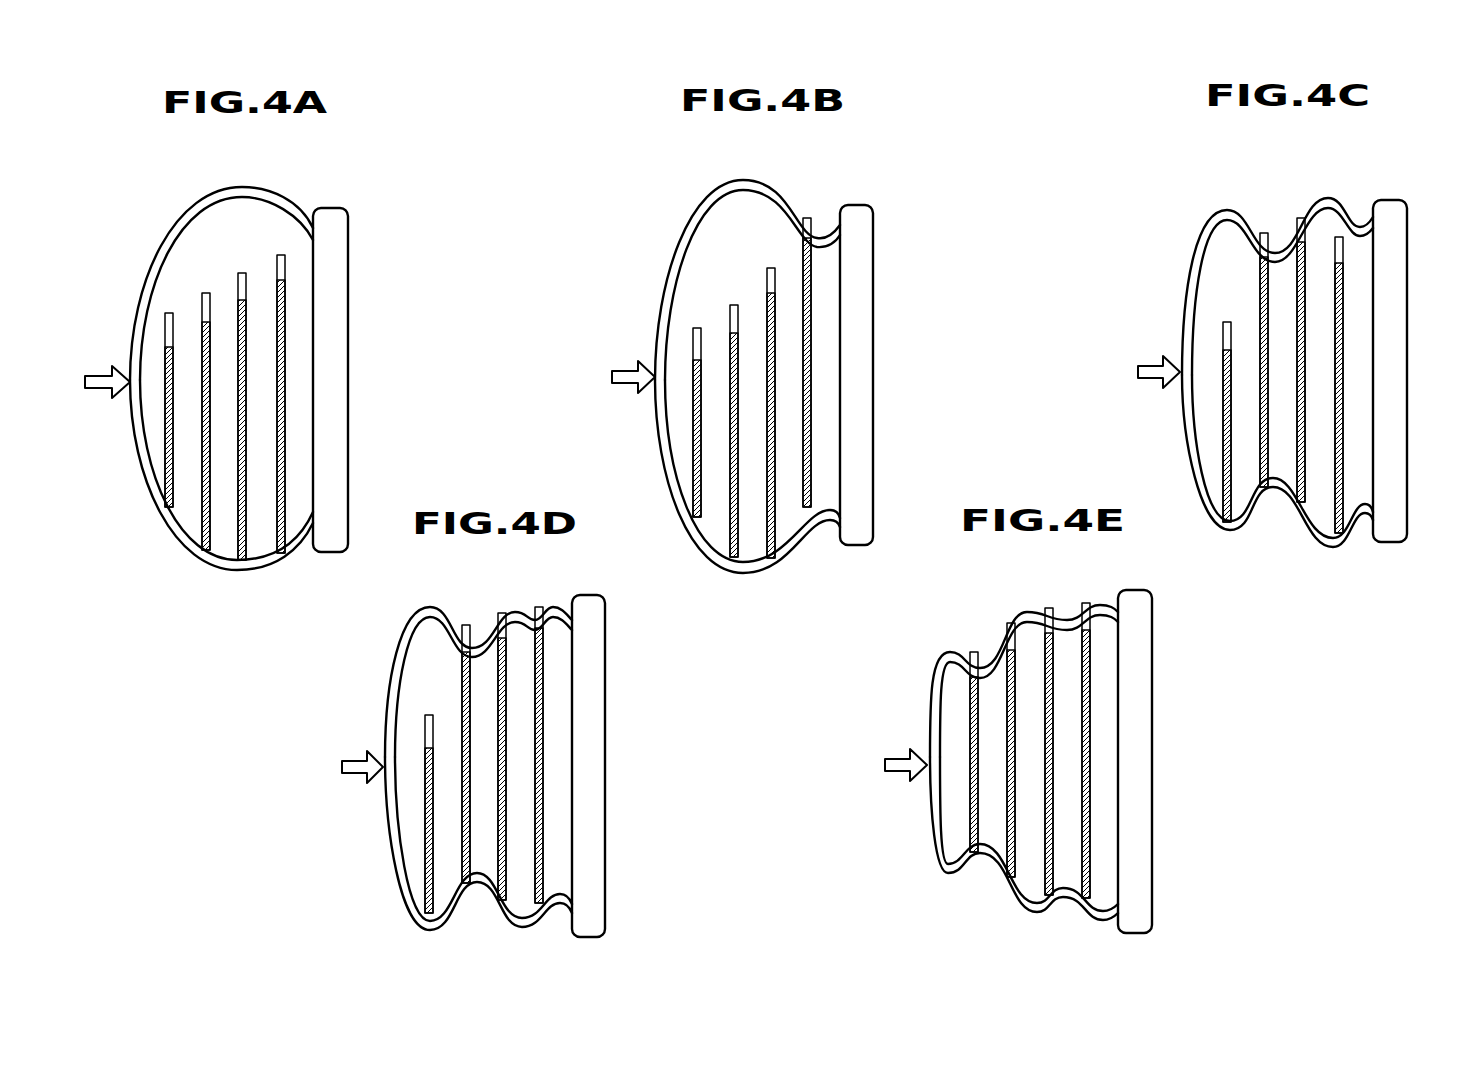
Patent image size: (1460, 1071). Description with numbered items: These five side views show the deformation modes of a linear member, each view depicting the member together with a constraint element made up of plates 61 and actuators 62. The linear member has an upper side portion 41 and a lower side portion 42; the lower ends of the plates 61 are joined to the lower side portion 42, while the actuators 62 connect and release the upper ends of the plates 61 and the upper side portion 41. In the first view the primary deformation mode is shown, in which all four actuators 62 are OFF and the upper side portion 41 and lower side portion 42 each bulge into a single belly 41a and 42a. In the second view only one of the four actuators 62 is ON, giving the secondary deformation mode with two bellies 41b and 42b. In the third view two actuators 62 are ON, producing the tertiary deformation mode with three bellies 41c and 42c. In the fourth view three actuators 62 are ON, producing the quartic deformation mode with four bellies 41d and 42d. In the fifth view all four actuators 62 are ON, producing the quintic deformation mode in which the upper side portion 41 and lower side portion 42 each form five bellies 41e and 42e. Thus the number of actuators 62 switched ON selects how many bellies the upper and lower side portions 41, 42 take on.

In FIG. 4A, the upper side portion 41 is at (221, 252).
In FIG. 4A, the lower side portion 42 is at (221, 510).
In FIG. 4A, the plate 61 is at (348, 377).
In FIG. 4B, the plate 61 is at (873, 357).
In FIG. 4C, the plate 61 is at (1407, 357).
In FIG. 4D, the plate 61 is at (605, 765).
In FIG. 4E, the plate 61 is at (1152, 765).
In FIG. 4A, the actuator 62 is at (277, 272).
In FIG. 4B, the actuator 62 is at (803, 240).
In FIG. 4C, the actuator 62 is at (1337, 258).
In FIG. 4D, the actuator 62 is at (433, 735).
In FIG. 4E, the actuator 62 is at (979, 678).
In FIG. 4A, the belly 41a is at (242, 184).
In FIG. 4A, the belly 42a is at (246, 576).
In FIG. 4B, the bellies 41b is at (822, 222).
In FIG. 4B, the bellies 42b is at (825, 528).
In FIG. 4C, the bellies 41c is at (1273, 232).
In FIG. 4C, the bellies 42c is at (1275, 506).
In FIG. 4D, the bellies 41d is at (554, 606).
In FIG. 4D, the bellies 42d is at (554, 921).
In FIG. 4E, the bellies 41e is at (958, 644).
In FIG. 4E, the bellies 42e is at (957, 879).